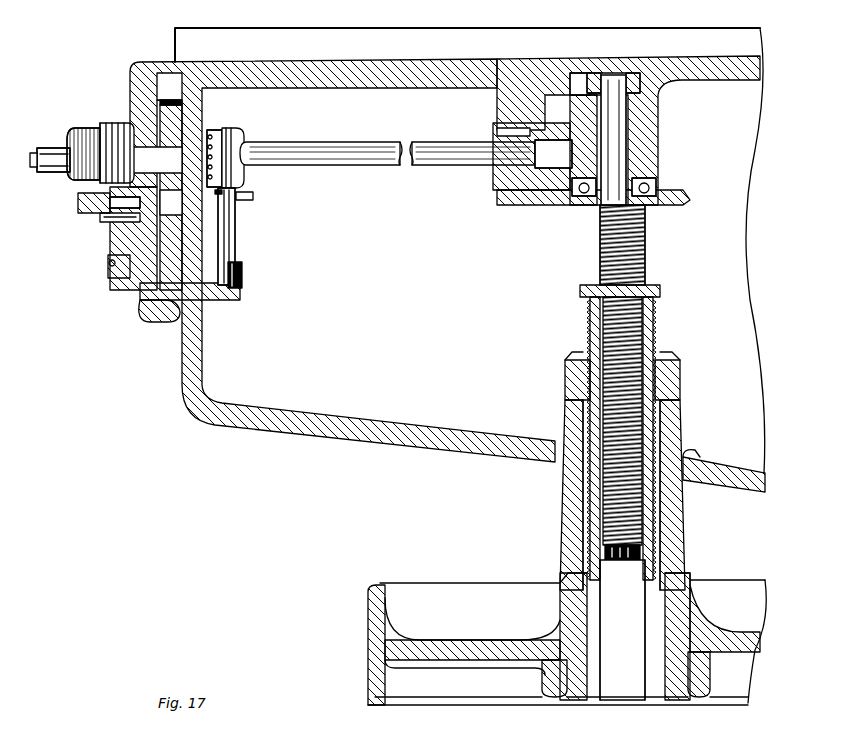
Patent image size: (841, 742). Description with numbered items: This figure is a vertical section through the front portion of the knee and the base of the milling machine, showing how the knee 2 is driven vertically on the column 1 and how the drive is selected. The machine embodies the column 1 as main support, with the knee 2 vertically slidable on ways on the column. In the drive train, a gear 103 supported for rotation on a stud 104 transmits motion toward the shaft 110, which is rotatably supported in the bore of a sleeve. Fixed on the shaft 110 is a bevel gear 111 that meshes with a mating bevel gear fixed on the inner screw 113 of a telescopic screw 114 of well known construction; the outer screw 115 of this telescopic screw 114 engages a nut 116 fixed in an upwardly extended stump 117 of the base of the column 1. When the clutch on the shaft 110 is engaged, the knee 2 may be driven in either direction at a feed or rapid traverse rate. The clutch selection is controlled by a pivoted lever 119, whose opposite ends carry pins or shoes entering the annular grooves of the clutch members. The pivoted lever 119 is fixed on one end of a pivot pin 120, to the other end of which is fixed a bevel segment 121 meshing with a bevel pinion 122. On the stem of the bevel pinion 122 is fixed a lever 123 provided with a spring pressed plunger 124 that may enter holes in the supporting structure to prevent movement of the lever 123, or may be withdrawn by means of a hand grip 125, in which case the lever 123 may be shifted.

The column 1 is at (412, 585).
The knee 2 is at (195, 403).
The gear 103 is at (158, 118).
The stud 104 is at (155, 135).
The shaft 110 is at (342, 160).
The bevel gear 111 is at (522, 192).
The inner screw 113 is at (642, 236).
The telescopic screw 114 is at (599, 304).
The outer screw 115 is at (658, 316).
The nut 116 is at (568, 393).
The stump 117 is at (578, 208).
The pivoted lever 119 is at (254, 206).
The pivot pin 120 is at (238, 236).
The bevel segment 121 is at (215, 287).
The bevel pinion 122 is at (160, 320).
The lever 123 is at (110, 250).
The spring pressed plunger 124 is at (112, 222).
The hand grip 125 is at (85, 214).